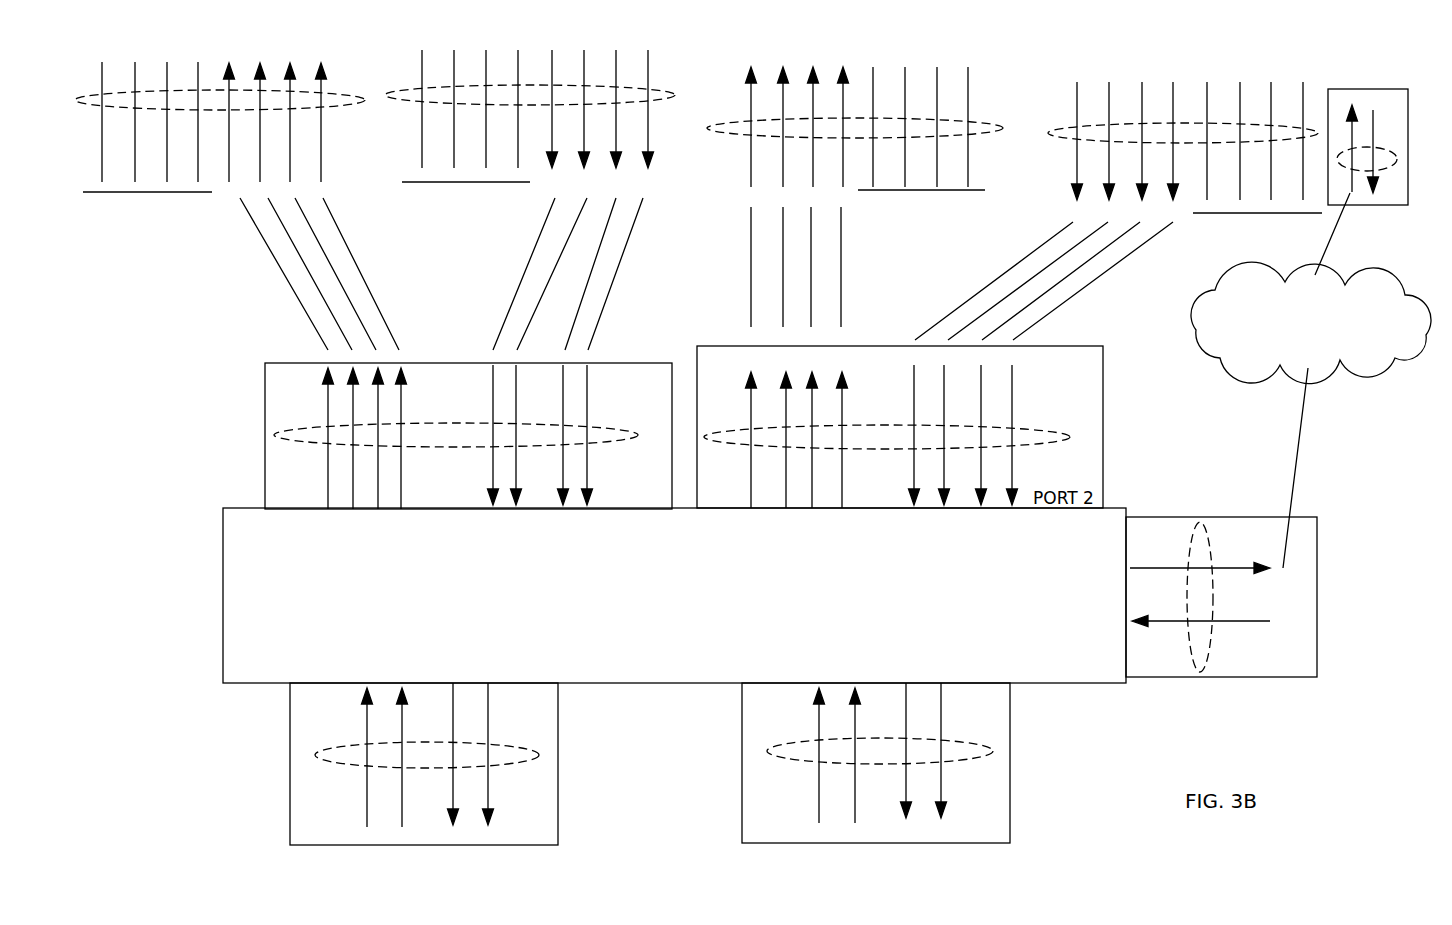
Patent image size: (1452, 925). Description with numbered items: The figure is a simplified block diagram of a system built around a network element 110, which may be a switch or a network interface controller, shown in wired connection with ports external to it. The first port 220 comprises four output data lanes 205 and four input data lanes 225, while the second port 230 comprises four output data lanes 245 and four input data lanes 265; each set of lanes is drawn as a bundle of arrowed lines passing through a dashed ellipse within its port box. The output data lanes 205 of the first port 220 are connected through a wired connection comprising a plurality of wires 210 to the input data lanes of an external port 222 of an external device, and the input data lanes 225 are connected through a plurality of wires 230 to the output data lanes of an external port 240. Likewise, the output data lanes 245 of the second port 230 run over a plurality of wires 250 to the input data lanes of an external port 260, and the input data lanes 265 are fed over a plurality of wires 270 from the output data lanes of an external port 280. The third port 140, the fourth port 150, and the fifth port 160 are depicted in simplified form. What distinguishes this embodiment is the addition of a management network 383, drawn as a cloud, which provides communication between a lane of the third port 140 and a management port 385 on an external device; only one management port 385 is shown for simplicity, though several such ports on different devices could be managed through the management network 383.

The network element 110 is at (223, 663).
The port 3 140 is at (1181, 517).
The port 4 150 is at (1010, 793).
The port 5 160 is at (558, 793).
The output data lanes 205 is at (412, 390).
The wires 210 is at (263, 292).
The port 1 220 is at (265, 437).
The external port 222 is at (340, 148).
The input data lanes 225 is at (592, 393).
The port 2 230 is at (507, 287).
The external port 240 is at (668, 118).
The output data lanes 245 is at (852, 382).
The wires 250 is at (747, 292).
The external port 260 is at (732, 177).
The input data lanes 265 is at (1023, 382).
The wires 270 is at (1073, 325).
The external port 280 is at (1050, 182).
The management network 383 is at (1380, 360).
The management port 385 is at (1373, 205).